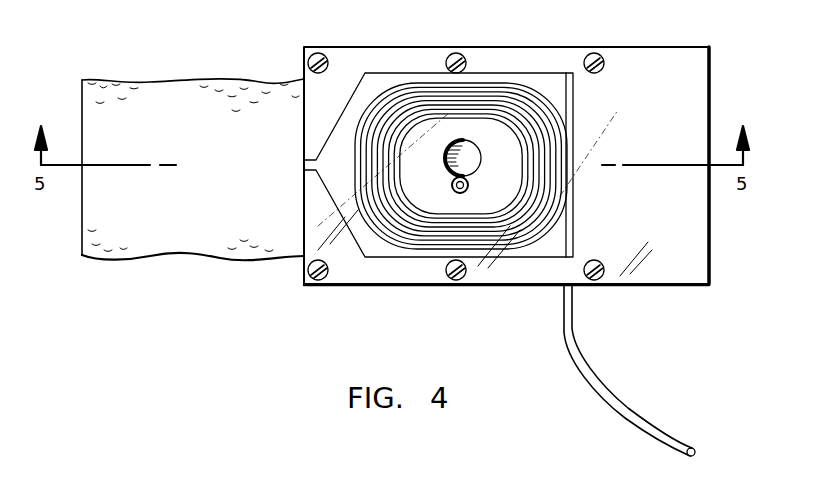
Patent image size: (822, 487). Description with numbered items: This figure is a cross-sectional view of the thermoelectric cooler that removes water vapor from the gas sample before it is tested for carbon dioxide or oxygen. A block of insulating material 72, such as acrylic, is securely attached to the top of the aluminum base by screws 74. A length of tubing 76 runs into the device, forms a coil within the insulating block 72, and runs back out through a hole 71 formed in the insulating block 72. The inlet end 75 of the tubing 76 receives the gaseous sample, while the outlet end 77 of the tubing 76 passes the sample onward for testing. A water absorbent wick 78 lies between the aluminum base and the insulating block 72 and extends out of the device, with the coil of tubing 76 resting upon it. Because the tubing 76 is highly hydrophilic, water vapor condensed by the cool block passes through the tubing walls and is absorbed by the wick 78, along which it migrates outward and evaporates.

The hole 71 is at (446, 180).
The insulating block 72 is at (710, 91).
The screws 74 is at (320, 53).
The inlet end 75 is at (694, 452).
The tubing 76 is at (632, 426).
The outlet end 77 is at (469, 188).
The water absorbent wick 78 is at (216, 248).